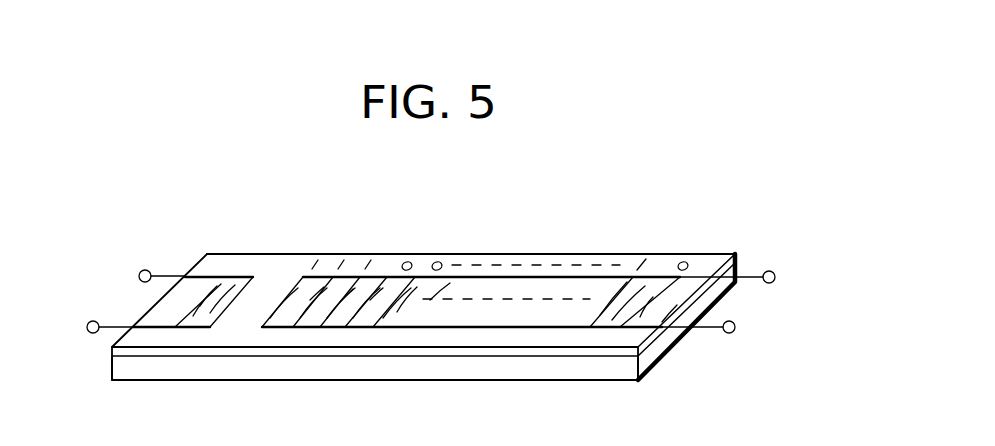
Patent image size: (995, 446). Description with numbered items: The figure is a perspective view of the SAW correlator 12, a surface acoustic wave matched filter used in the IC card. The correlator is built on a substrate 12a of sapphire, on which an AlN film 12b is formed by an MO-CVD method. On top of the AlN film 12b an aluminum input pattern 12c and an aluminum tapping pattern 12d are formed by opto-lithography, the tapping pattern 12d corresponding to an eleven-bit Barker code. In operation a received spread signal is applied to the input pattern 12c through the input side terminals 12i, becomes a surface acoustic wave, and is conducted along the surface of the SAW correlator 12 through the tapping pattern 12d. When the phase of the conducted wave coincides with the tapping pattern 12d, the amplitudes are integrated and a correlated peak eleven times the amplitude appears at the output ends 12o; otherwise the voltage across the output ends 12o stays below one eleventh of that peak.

The SAW correlator 12 is at (605, 247).
The substrate 12a is at (527, 380).
The AlN film 12b is at (420, 352).
The input pattern 12c is at (247, 277).
The tapping pattern 12d is at (493, 277).
The input terminal 12i is at (142, 270).
The output ends 12o is at (772, 283).